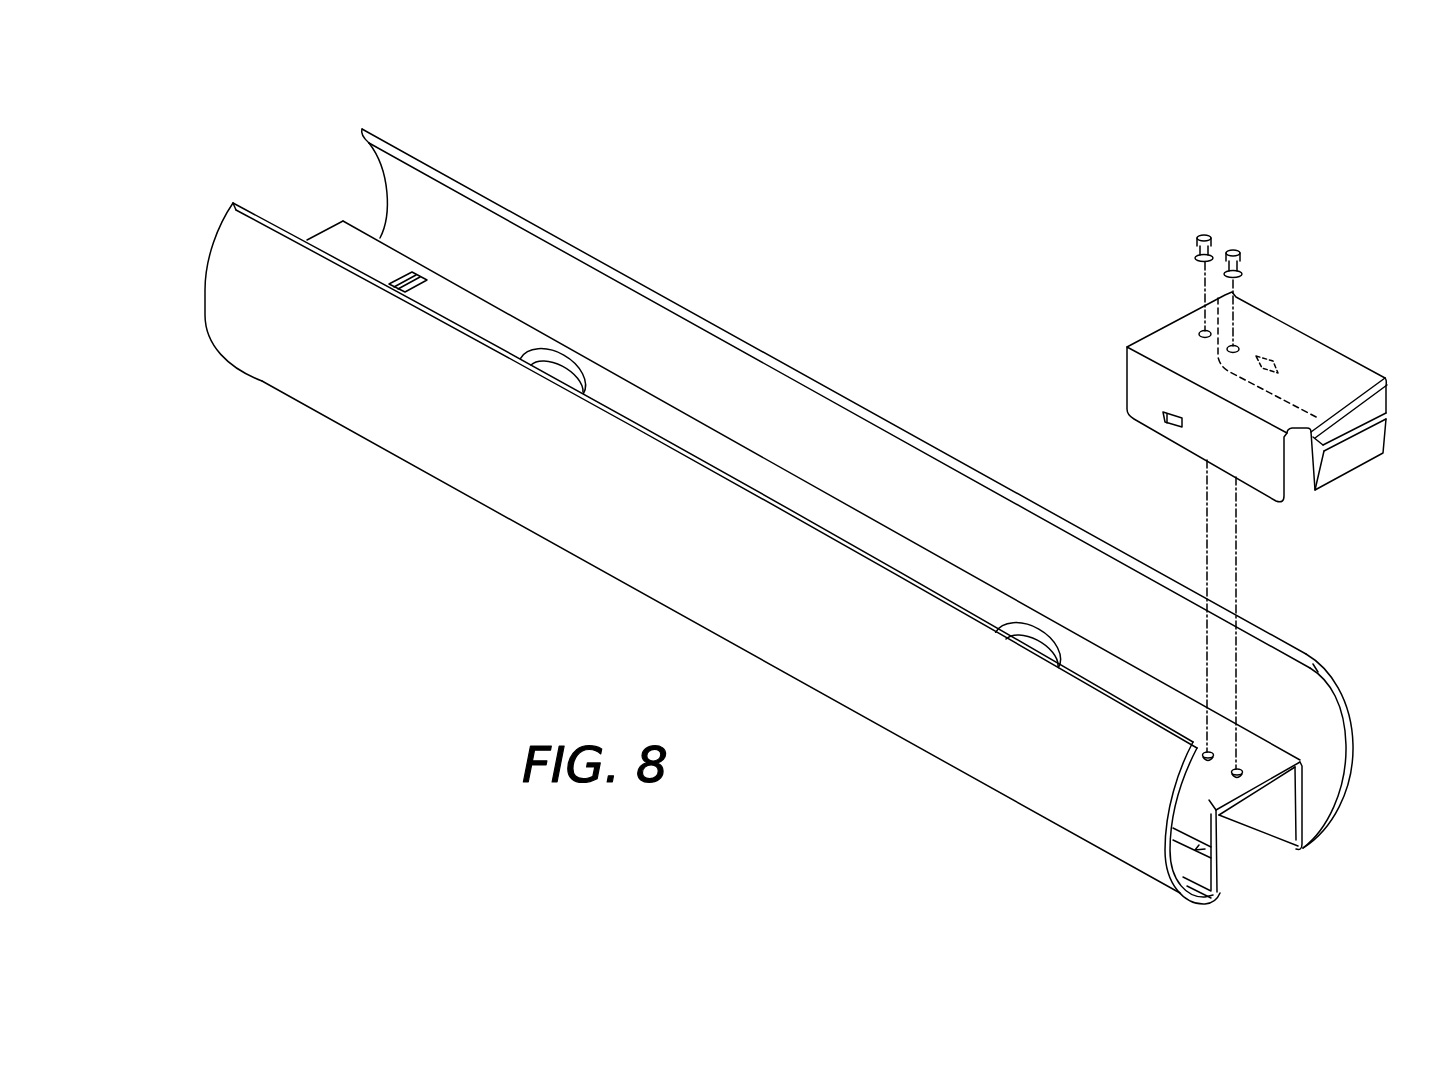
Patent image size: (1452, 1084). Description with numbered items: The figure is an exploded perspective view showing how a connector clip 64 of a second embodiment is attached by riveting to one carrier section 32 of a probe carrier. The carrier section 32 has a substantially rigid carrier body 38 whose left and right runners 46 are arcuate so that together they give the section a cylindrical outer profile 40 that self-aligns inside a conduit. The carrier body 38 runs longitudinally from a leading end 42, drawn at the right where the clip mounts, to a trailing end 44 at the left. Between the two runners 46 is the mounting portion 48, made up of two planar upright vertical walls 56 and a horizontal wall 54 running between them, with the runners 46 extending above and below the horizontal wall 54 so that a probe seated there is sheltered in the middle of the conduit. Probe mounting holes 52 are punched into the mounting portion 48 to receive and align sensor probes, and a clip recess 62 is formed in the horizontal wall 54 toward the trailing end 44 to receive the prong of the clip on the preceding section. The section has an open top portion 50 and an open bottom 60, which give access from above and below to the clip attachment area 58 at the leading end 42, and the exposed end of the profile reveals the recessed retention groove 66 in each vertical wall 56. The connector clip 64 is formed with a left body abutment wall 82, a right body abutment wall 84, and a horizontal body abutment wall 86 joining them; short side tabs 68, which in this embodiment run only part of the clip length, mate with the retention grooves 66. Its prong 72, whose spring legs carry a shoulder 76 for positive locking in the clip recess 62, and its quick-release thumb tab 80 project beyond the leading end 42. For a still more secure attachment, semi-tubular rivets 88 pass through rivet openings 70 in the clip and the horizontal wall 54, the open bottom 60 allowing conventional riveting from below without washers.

The carrier section 32 is at (565, 184).
The carrier body 38 is at (467, 181).
The cylindrical outer profile 40 is at (228, 243).
The leading end 42 is at (1305, 846).
The trailing end 44 is at (203, 291).
The runner 46 is at (700, 483).
The mounting portion 48 is at (1263, 778).
The open top portion 50 is at (288, 193).
The probe mounting hole 52 is at (562, 373).
The horizontal wall 54 is at (1263, 800).
The vertical wall 56 is at (1303, 782).
The clip attachment area 58 is at (1215, 800).
The open bottom 60 is at (1263, 864).
The clip recess 62 is at (403, 270).
The connector clip 64 is at (1110, 369).
The recessed retention groove 66 is at (1207, 856).
The side tab 68 is at (1279, 355).
The rivet opening 70 is at (1203, 331).
The prong 72 is at (1366, 473).
The shoulder 76 is at (1388, 412).
The thumb tab 80 is at (1380, 392).
The left body abutment wall 82 is at (1357, 371).
The right body abutment wall 84 is at (1200, 443).
The horizontal body abutment wall 86 is at (1318, 364).
The semi-tubular rivet 88 is at (1207, 228).